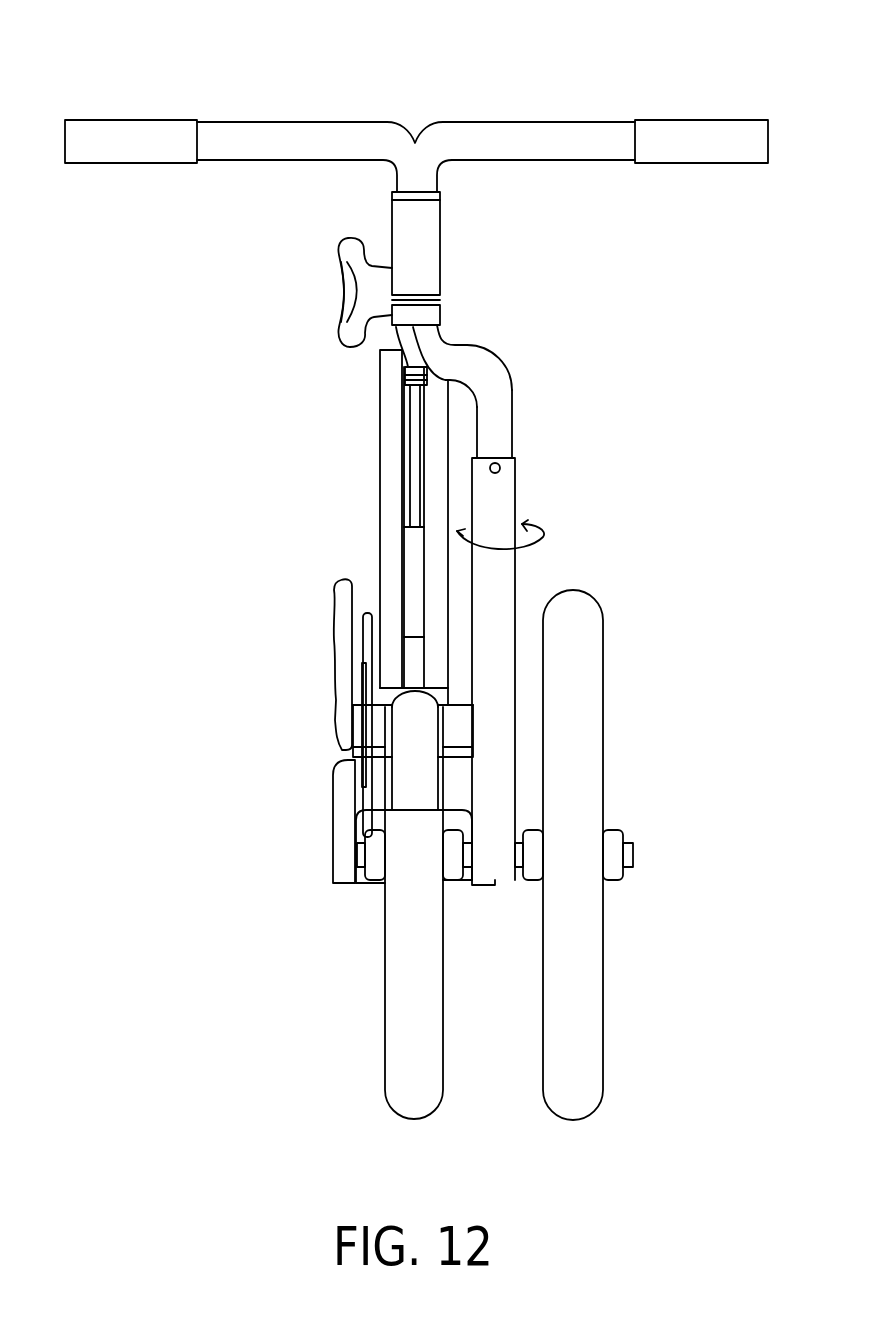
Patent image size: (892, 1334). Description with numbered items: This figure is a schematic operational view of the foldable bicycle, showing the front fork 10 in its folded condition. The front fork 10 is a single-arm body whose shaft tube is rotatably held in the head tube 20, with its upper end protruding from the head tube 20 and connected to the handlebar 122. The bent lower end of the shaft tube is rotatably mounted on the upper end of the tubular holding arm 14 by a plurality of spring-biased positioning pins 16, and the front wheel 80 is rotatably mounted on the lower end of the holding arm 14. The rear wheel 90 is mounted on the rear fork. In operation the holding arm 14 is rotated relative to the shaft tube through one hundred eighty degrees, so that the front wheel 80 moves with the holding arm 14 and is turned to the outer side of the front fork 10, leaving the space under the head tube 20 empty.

The handlebar 122 is at (541, 130).
The head tube 20 is at (452, 256).
The front fork 10 is at (580, 385).
The holding arm 14 is at (507, 583).
The spring-biased positioning pins 16 is at (517, 473).
The rear wheel 90 is at (402, 1015).
The front wheel 80 is at (585, 1015).